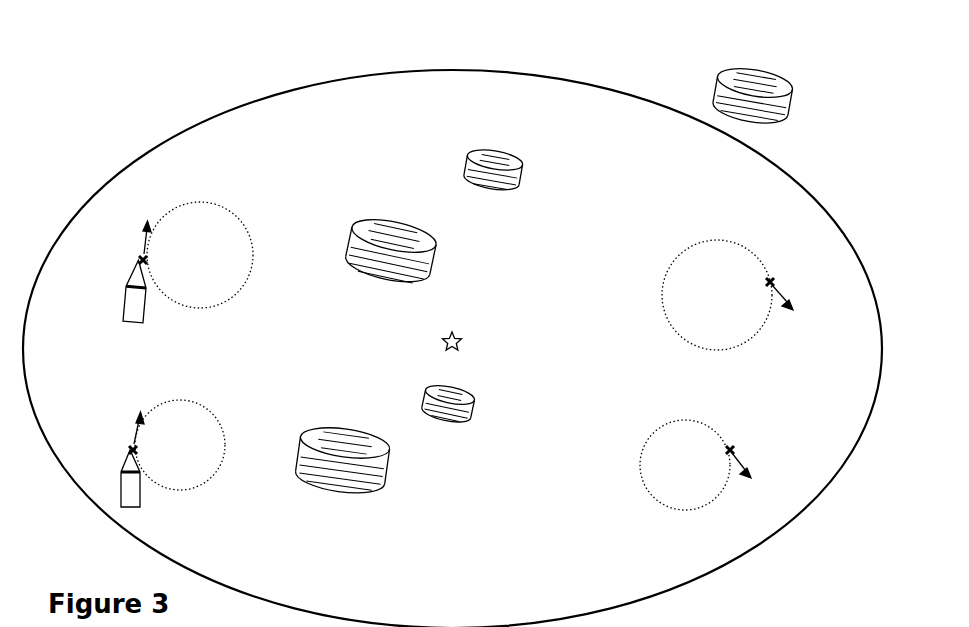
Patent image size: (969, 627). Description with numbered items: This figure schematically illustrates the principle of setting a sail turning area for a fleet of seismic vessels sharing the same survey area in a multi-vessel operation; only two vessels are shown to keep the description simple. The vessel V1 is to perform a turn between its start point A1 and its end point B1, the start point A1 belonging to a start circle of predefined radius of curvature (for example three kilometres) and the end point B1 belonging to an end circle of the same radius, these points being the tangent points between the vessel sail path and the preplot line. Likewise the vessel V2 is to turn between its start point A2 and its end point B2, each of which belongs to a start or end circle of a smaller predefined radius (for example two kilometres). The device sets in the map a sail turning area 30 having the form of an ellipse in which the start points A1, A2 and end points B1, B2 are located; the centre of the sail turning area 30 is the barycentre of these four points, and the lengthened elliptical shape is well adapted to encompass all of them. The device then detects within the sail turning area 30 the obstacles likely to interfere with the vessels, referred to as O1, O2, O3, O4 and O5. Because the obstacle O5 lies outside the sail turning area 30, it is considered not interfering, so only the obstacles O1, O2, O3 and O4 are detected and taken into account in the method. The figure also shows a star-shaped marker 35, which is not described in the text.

The sail turning area 30 is at (832, 221).
The target point 35 is at (457, 334).
The obstacle O1 is at (498, 153).
The obstacle O2 is at (391, 223).
The obstacle O3 is at (466, 391).
The obstacle O4 is at (348, 437).
The obstacle O5 is at (768, 78).
The start point A1 is at (178, 255).
The start point A2 is at (161, 445).
The end point B1 is at (730, 295).
The end point B2 is at (699, 465).
The vessel V1 is at (140, 313).
The vessel V2 is at (140, 498).